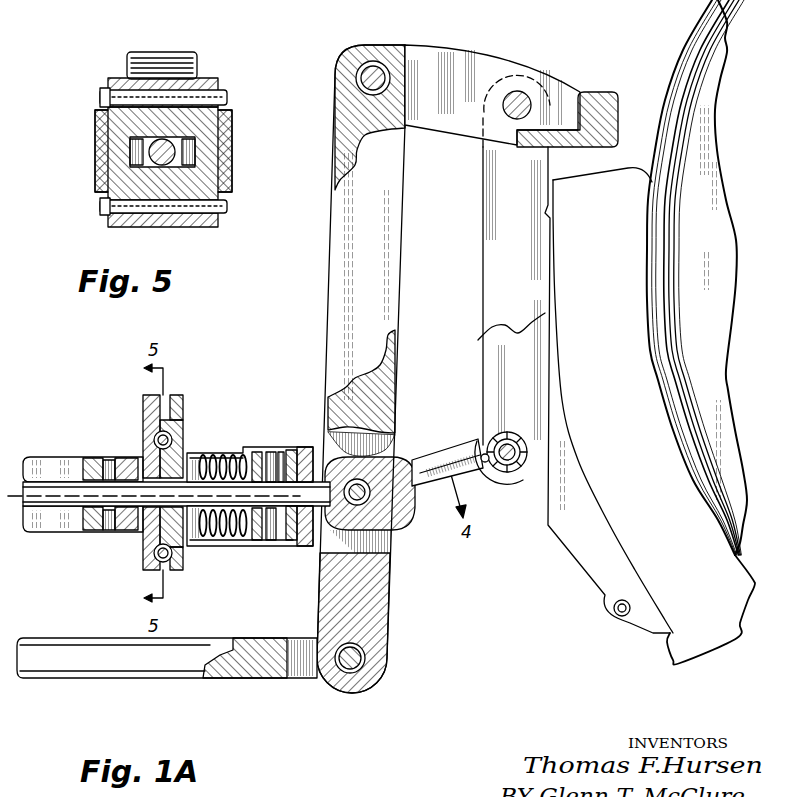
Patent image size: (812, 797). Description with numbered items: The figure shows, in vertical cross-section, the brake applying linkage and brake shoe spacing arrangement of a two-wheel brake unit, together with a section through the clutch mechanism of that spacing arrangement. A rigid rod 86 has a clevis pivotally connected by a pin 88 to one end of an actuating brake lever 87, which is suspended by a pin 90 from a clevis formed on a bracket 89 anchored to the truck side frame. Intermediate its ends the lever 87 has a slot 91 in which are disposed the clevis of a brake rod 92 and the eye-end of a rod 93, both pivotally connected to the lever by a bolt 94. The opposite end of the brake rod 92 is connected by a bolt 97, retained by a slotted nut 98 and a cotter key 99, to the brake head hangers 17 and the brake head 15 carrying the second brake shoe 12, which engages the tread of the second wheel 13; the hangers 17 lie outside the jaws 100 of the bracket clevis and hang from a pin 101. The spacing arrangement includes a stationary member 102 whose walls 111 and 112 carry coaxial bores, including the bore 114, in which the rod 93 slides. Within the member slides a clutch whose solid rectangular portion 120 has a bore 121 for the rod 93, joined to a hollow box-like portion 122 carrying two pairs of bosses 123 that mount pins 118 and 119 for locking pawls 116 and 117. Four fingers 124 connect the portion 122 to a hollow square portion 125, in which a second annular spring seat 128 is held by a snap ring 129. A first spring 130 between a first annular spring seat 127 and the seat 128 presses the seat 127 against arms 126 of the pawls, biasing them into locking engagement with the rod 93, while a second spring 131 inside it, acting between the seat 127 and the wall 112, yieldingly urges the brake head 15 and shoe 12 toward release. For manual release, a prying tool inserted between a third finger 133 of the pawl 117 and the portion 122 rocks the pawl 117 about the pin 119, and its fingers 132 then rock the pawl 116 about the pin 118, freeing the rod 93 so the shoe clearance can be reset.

In FIG. 1A, the second brake shoe 12 is at (666, 639).
In FIG. 1A, the second wheel 13 is at (688, 58).
In FIG. 1A, the brake head 15 is at (576, 547).
In FIG. 1A, the brake head hangers 17 is at (493, 255).
In FIG. 1A, the rod 86 is at (125, 664).
In FIG. 1A, the actuating brake lever 87 is at (340, 255).
In FIG. 1A, the pin 88 is at (366, 658).
In FIG. 1A, the bracket 89 is at (606, 95).
In FIG. 1A, the pin 90 is at (378, 54).
In FIG. 1A, the slot 91 is at (377, 543).
In FIG. 1A, the brake rod 92 is at (457, 458).
In FIG. 5, the rod 93 is at (173, 150).
In FIG. 1A, the rod 93 is at (82, 500).
In FIG. 1A, the bolt 94 is at (385, 510).
In FIG. 1A, the bolt 97 is at (512, 478).
In FIG. 1A, the slotted nut 98 is at (490, 437).
In FIG. 1A, the cotter key 99 is at (485, 463).
In FIG. 1A, the jaws 100 is at (472, 50).
In FIG. 1A, the pin 101 is at (528, 95).
In FIG. 5, the stationary member 102 is at (100, 118).
In FIG. 1A, the wall 111 is at (113, 528).
In FIG. 1A, the wall 112 is at (288, 537).
In FIG. 1A, the bore 114 is at (303, 452).
In FIG. 5, the locking pawl 116 is at (132, 180).
In FIG. 1A, the locking pawl 116 is at (157, 527).
In FIG. 5, the locking pawl 117 is at (153, 82).
In FIG. 1A, the locking pawl 117 is at (150, 453).
In FIG. 5, the pin 118 is at (112, 214).
In FIG. 1A, the pin 118 is at (153, 558).
In FIG. 5, the pin 119 is at (210, 97).
In FIG. 1A, the pin 119 is at (156, 435).
In FIG. 1A, the solid rectangular shaped portion 120 is at (107, 472).
In FIG. 1A, the bore 121 is at (103, 484).
In FIG. 5, the hollow box-like rectangular portion 122 is at (121, 162).
In FIG. 1A, the hollow box-like rectangular portion 122 is at (184, 400).
In FIG. 1A, the bosses 123 is at (108, 462).
In FIG. 1A, the fingers 124 is at (243, 447).
In FIG. 1A, the hollow square shaped portion 125 is at (268, 541).
In FIG. 1A, the arm 126 is at (192, 455).
In FIG. 1A, the first annular spring seat 127 is at (224, 441).
In FIG. 1A, the second annular spring seat 128 is at (290, 548).
In FIG. 1A, the snap ring 129 is at (262, 450).
In FIG. 1A, the first spring 130 is at (240, 536).
In FIG. 1A, the second spring 131 is at (276, 452).
In FIG. 5, the fingers 132 is at (136, 145).
In FIG. 1A, the fingers 132 is at (125, 532).
In FIG. 5, the third finger 133 is at (187, 60).
In FIG. 1A, the third finger 133 is at (158, 420).